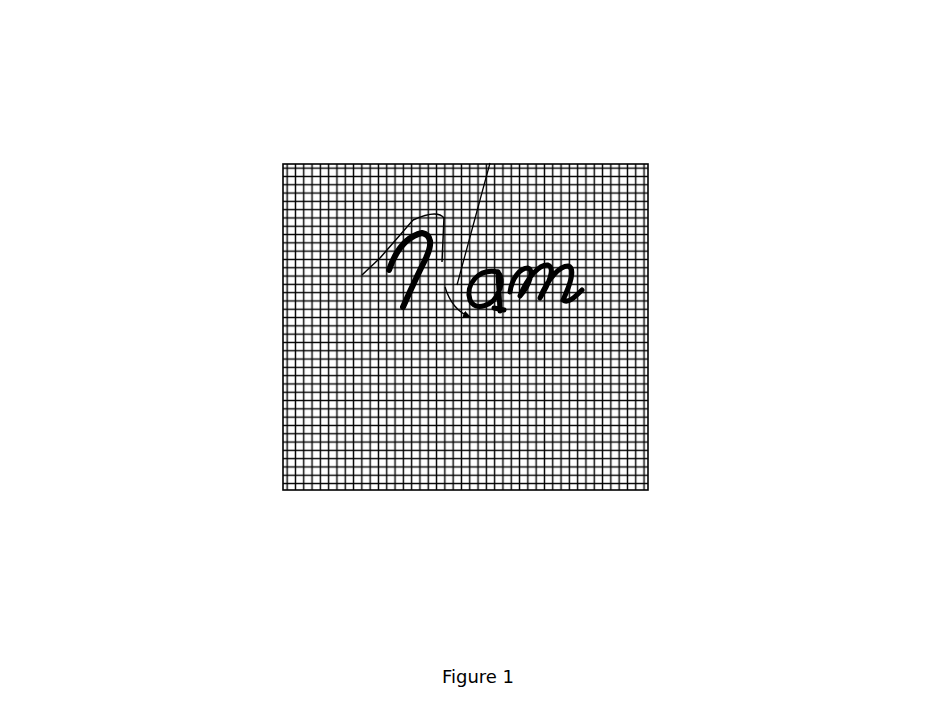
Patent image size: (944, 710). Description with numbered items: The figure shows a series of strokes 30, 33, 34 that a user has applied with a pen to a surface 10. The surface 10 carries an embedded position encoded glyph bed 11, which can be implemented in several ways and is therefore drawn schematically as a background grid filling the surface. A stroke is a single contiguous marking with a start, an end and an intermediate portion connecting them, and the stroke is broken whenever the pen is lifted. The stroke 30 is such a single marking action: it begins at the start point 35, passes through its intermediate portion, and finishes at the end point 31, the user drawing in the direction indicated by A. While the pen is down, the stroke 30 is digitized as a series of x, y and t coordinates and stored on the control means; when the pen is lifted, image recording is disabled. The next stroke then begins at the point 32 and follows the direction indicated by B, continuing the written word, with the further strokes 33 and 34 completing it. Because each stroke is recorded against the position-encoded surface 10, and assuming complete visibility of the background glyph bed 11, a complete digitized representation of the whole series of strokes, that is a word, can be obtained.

The surface 10 is at (283, 453).
The position encoded glyph bed 11 is at (340, 447).
The stroke 30 is at (407, 225).
The end of stroke 31 is at (403, 307).
The start point of next stroke 32 is at (506, 250).
The stroke 33 is at (512, 271).
The stroke 34 is at (500, 306).
The start of stroke 35 is at (362, 275).
The drawing direction A is at (436, 278).
The drawing direction B is at (479, 240).